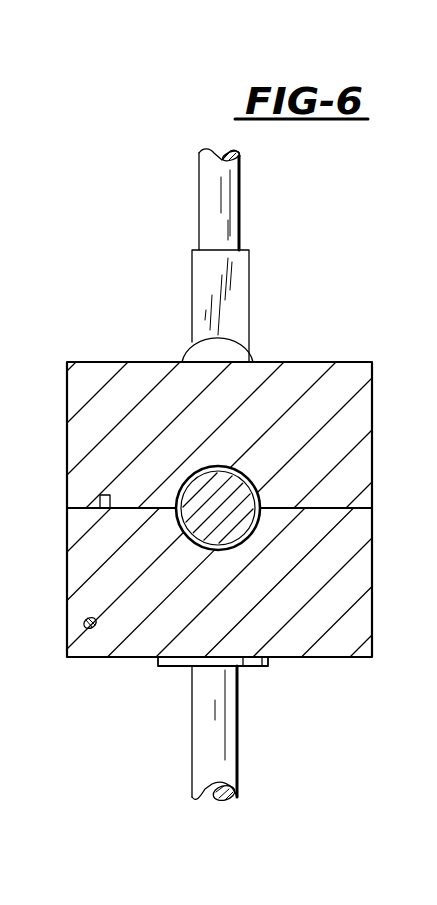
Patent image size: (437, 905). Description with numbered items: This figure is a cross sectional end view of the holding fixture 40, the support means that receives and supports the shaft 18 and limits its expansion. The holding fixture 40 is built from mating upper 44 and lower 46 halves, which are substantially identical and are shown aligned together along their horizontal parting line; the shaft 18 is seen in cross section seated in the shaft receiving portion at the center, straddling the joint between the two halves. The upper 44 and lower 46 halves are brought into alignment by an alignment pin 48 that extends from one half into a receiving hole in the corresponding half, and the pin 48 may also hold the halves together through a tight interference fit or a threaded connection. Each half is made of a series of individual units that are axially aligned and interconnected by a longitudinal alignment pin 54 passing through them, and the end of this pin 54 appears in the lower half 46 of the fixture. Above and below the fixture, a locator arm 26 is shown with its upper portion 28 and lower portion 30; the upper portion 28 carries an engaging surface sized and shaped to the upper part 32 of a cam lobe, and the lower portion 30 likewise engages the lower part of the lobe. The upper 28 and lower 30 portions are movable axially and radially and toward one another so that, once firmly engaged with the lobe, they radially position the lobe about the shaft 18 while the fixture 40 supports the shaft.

The shaft 18 is at (257, 525).
The locator arm 26 is at (241, 188).
The upper portion 28 is at (249, 275).
The lower portion 30 is at (250, 668).
The upper part of cam lobe 32 is at (230, 343).
The holding fixture 40 is at (252, 556).
The upper half 44 is at (371, 440).
The lower half 46 is at (362, 672).
The alignment pin 48 is at (99, 503).
The longitudinal alignment pin 54 is at (95, 628).